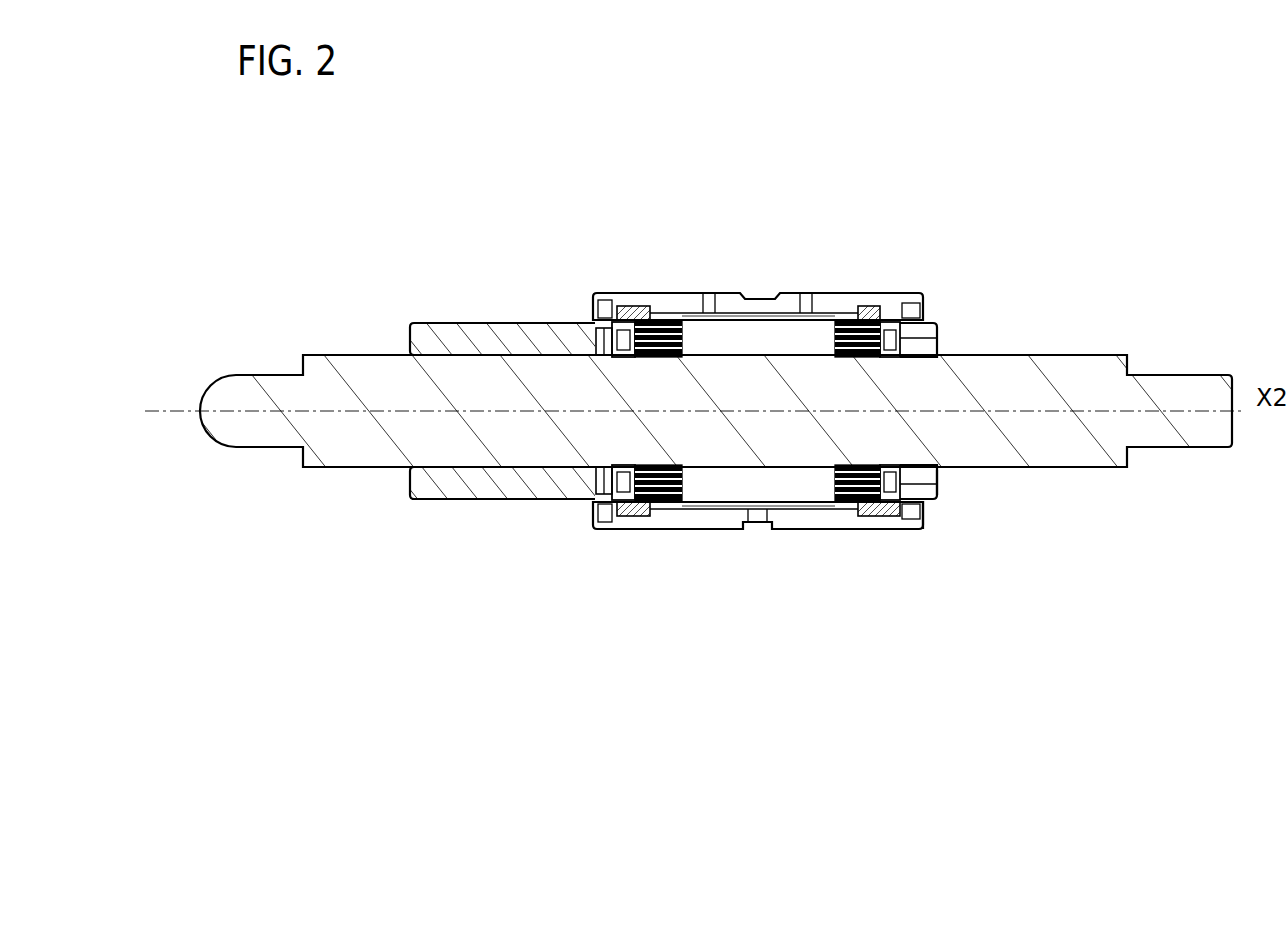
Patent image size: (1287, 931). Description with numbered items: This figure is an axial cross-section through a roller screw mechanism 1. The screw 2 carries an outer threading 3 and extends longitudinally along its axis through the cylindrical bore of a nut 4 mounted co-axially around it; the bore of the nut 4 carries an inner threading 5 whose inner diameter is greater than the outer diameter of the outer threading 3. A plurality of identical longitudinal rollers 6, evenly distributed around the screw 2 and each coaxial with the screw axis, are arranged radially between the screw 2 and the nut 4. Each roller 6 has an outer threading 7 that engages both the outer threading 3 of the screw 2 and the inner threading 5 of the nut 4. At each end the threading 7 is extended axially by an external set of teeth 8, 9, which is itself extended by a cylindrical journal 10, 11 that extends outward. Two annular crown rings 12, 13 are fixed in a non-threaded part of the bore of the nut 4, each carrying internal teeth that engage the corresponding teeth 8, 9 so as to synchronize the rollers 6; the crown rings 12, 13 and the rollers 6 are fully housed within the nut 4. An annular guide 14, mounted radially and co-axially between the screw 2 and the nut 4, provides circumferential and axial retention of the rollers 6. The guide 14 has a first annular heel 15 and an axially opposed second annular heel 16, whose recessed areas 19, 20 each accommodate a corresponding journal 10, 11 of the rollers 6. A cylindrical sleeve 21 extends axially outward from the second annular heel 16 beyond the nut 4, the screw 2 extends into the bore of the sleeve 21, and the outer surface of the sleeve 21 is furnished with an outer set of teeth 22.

The roller screw mechanism 1 is at (528, 221).
The screw 2 is at (1192, 455).
The outer threading 3 is at (1013, 468).
The nut 4 is at (915, 535).
The inner threading 5 is at (797, 487).
The longitudinal rollers 6 is at (712, 340).
The outer threading 7 is at (707, 527).
The external set of teeth 8 is at (662, 322).
The external set of teeth 9 is at (843, 325).
The cylindrical journal 10 is at (618, 318).
The cylindrical journal 11 is at (887, 323).
The annular crown ring 12 is at (637, 522).
The annular crown ring 13 is at (878, 516).
The annular guide 14 is at (401, 325).
The first annular heel 15 is at (937, 330).
The second annular heel 16 is at (594, 337).
The recessed areas 19 is at (939, 484).
The recessed areas 20 is at (558, 500).
The cylindrical sleeve 21 is at (497, 500).
The outer set of teeth 22 is at (455, 500).